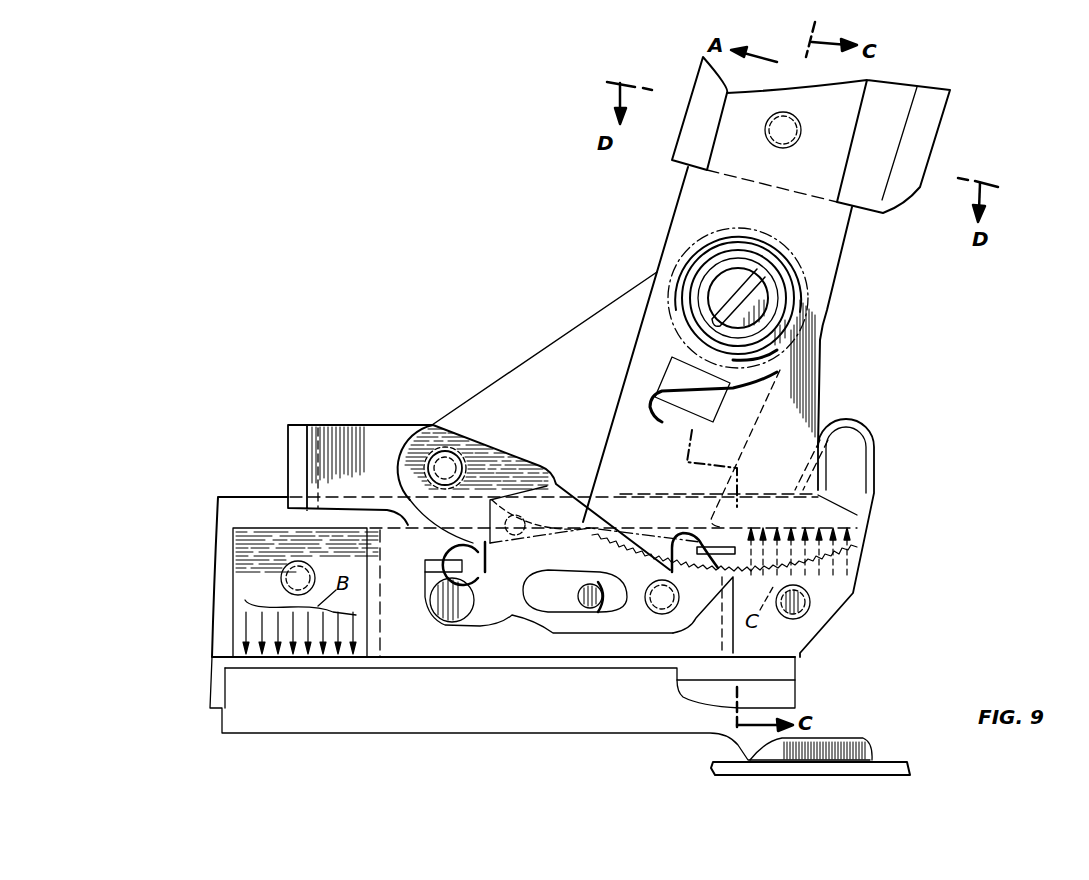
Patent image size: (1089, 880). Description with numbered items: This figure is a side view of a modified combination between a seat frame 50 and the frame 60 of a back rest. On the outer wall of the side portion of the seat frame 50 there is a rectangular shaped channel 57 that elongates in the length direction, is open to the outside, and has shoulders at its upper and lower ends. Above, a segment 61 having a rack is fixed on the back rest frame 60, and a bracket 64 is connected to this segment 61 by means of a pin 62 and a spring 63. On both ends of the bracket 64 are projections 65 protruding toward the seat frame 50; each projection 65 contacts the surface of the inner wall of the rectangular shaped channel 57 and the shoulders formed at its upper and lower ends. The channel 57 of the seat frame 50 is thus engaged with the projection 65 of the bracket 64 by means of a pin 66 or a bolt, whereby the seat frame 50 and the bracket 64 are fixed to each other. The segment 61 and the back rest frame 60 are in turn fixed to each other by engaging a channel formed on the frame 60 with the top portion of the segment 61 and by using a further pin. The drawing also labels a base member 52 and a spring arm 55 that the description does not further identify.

The seat frame 50 is at (248, 489).
The base plate 52 is at (310, 725).
The torsion spring arm 55 is at (787, 350).
The rectangular shaped channel 57 is at (220, 627).
The frame of back rest 60 is at (935, 117).
The segment 61 is at (826, 253).
The pin 62 is at (760, 301).
The spring 63 is at (690, 270).
The bracket 64 is at (520, 365).
The projections 65 is at (247, 551).
The pin 66 is at (280, 578).